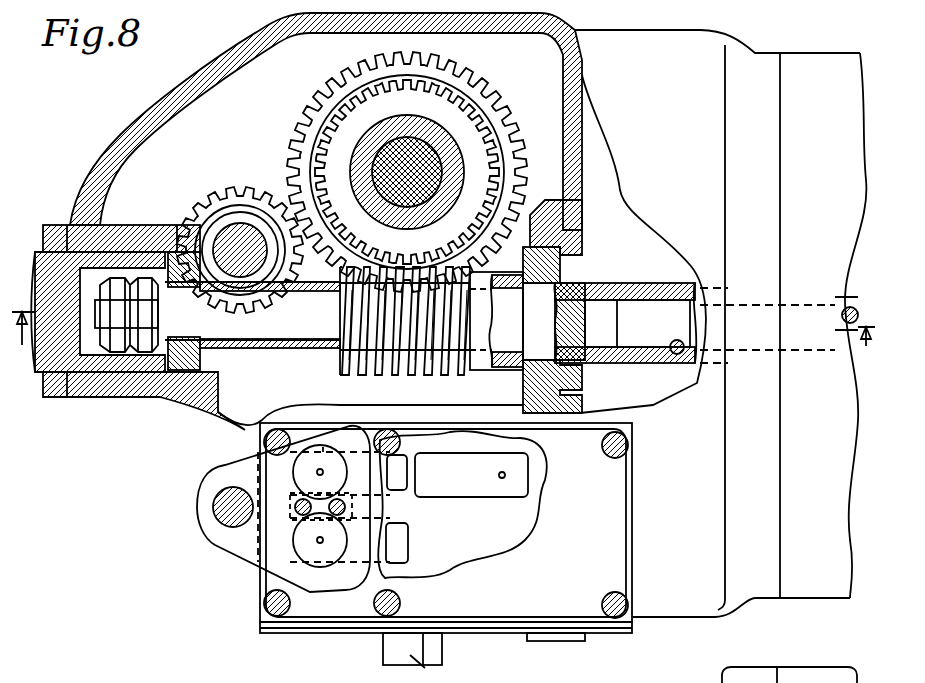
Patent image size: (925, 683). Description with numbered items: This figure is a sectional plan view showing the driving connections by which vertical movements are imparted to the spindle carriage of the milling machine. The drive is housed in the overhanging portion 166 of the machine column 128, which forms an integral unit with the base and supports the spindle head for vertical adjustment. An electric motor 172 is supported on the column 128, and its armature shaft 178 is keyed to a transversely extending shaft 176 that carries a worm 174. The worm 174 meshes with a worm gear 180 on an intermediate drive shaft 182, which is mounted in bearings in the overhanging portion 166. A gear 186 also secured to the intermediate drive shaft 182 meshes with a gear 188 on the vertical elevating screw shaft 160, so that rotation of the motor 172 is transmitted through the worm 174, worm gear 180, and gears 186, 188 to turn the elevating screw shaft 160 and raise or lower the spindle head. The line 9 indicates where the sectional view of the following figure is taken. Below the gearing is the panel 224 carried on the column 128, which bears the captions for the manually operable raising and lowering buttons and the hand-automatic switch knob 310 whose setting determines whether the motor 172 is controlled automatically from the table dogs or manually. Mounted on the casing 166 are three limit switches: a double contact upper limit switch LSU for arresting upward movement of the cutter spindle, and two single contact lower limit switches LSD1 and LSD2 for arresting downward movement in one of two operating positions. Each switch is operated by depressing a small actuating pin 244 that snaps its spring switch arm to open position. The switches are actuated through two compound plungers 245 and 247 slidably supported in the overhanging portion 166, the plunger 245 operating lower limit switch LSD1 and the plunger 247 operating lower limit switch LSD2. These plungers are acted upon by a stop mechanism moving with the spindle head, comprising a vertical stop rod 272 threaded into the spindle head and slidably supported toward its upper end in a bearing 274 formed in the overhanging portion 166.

The overhanging portion of the column 166 is at (163, 100).
The transversely extending shaft 176 is at (252, 335).
The armature shaft 178 is at (656, 336).
The worm gear 180 is at (448, 255).
The worm 174 is at (405, 370).
The gear 186 is at (302, 108).
The intermediate drive shaft 182 is at (414, 150).
The gear 188 is at (207, 191).
The elevating screw shaft 160 is at (248, 232).
The electric motor 172 is at (848, 165).
The section line 9- 9 is at (443, 342).
The panel 224 is at (458, 632).
The bearing 274 is at (222, 530).
The vertical stop rod 272 is at (225, 508).
The actuating pin 244 is at (320, 472).
The compound plunger 245 is at (322, 548).
The compound plunger 247 is at (323, 447).
The upper limit switch LSU is at (520, 475).
The lower limit switch LSD1 is at (400, 487).
The lower limit switch LSD2 is at (405, 540).
The hand-automatic switch knob 310 is at (385, 646).
The machine column 128 is at (668, 605).